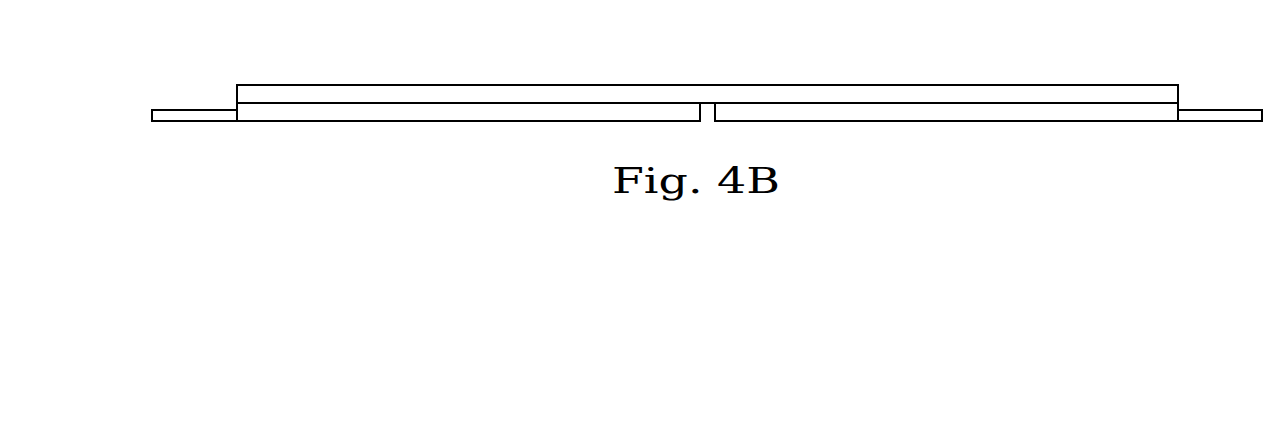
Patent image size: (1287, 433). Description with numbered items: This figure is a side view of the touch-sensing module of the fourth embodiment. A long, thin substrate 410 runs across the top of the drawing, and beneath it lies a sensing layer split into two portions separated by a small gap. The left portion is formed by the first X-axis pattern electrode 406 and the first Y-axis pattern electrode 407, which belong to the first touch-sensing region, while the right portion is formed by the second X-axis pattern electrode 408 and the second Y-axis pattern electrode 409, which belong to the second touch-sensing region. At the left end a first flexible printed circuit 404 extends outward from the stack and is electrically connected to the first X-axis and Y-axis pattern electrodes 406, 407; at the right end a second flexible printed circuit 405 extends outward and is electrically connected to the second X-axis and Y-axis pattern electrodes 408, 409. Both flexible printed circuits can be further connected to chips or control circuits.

The first flexible printed circuit 404 is at (184, 112).
The second flexible printed circuit 405 is at (1232, 115).
The first X-axis pattern electrode 406 is at (350, 110).
The first Y-axis pattern electrode 407 is at (468, 112).
The second X-axis pattern electrode 408 is at (1065, 110).
The second Y-axis pattern electrode 409 is at (946, 112).
The substrate 410 is at (1115, 95).